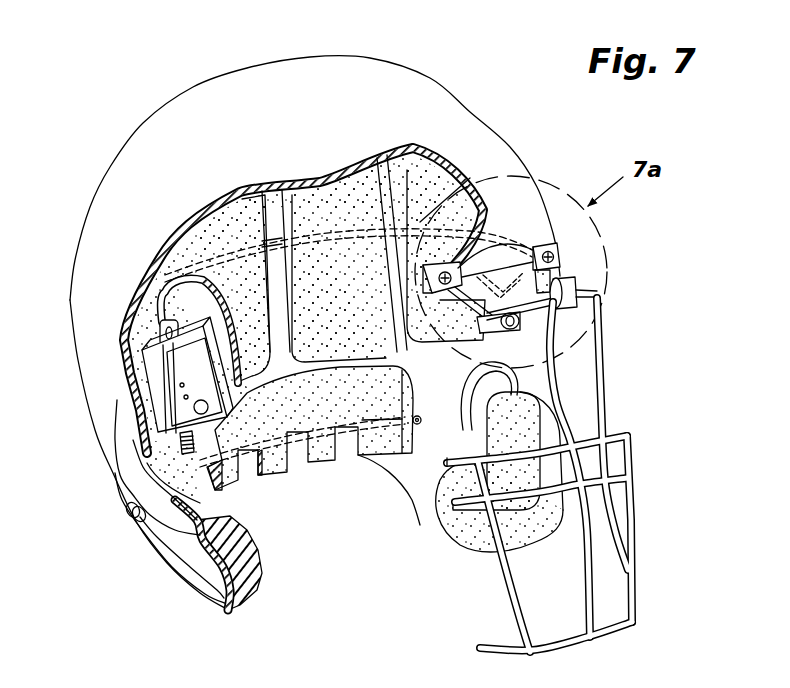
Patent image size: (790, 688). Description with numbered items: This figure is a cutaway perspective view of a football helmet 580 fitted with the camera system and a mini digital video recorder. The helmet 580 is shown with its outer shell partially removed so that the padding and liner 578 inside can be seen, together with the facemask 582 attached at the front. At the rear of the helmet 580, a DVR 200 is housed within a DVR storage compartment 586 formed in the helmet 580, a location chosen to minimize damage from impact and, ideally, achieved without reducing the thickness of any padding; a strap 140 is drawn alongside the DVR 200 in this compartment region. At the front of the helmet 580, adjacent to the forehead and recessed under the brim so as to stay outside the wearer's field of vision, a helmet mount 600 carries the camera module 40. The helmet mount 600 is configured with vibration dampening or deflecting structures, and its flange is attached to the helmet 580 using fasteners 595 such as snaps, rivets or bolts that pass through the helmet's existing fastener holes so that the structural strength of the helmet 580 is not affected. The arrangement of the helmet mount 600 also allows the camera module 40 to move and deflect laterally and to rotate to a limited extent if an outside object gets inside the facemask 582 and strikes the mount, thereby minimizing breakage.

The helmet 580 is at (140, 130).
The liner padding 578 is at (222, 240).
The strap 140 is at (165, 290).
The DVR storage compartment 586 is at (150, 268).
The DVR 200 is at (152, 335).
The fasteners 595 is at (470, 275).
The helmet mount 600 is at (462, 312).
The camera module 40 is at (510, 340).
The facemask 582 is at (642, 460).